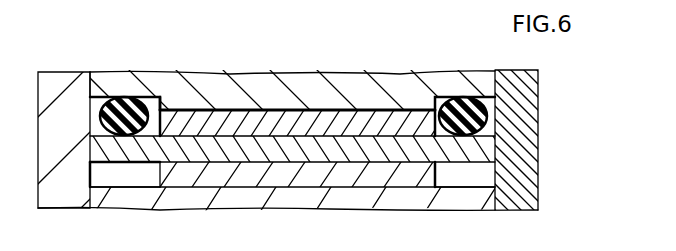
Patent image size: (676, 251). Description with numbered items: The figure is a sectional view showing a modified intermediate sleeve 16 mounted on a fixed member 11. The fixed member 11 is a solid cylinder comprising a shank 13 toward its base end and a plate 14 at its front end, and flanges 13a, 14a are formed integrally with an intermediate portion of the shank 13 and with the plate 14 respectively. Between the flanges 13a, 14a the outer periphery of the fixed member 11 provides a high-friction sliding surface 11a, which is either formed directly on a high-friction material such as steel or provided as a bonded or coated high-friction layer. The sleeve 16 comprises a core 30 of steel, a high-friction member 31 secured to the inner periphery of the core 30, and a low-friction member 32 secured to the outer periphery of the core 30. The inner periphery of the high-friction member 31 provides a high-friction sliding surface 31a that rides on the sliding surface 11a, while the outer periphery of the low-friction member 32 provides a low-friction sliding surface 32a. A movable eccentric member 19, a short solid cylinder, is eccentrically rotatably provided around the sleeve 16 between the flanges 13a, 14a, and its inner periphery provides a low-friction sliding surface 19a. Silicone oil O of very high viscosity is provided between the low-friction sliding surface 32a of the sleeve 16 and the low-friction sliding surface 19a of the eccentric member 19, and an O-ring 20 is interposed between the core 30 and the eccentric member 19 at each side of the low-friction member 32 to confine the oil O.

The fixed member 11 is at (52, 175).
The high-friction sliding surface 11a is at (223, 108).
The shank 13 is at (45, 119).
The flange 13a is at (90, 80).
The plate 14 is at (528, 188).
The flange 14a is at (528, 118).
The intermediate sleeve 16 is at (358, 146).
The movable eccentric member 19 is at (485, 78).
The low-friction sliding surface 19a is at (380, 113).
The O-ring 20 is at (125, 98).
The core 30 is at (128, 160).
The high-friction member 31 is at (175, 178).
The high-friction sliding surface 31a is at (203, 188).
The low-friction member 32 is at (415, 118).
The low-friction sliding surface 32a is at (312, 112).
The silicone oil O is at (266, 108).